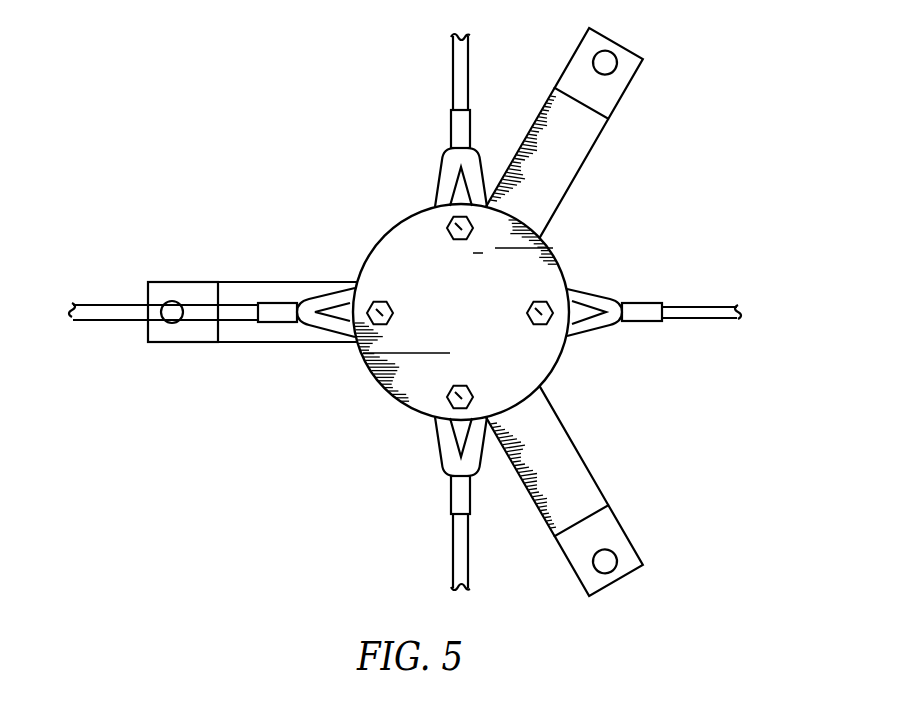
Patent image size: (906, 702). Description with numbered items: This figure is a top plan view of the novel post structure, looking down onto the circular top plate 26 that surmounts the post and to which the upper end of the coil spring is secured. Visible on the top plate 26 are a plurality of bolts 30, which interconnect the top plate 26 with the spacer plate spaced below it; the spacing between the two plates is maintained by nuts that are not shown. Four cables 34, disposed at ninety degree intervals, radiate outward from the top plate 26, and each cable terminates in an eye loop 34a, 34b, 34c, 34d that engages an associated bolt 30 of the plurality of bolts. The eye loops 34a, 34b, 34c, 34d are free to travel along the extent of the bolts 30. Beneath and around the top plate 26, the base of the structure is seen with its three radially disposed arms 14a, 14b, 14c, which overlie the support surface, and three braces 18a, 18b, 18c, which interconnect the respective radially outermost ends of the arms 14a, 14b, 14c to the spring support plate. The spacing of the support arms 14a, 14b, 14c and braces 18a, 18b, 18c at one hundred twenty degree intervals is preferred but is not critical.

The top plate 26 is at (473, 324).
The bolts 30 is at (450, 236).
The cables 34 is at (453, 70).
The eye loop 34a is at (447, 183).
The eye loop 34b is at (323, 339).
The eye loop 34c is at (447, 443).
The eye loop 34d is at (588, 288).
The arm 14a is at (187, 282).
The arm 14b is at (626, 86).
The arm 14c is at (627, 538).
The brace 18a is at (290, 282).
The brace 18b is at (577, 170).
The brace 18c is at (580, 451).